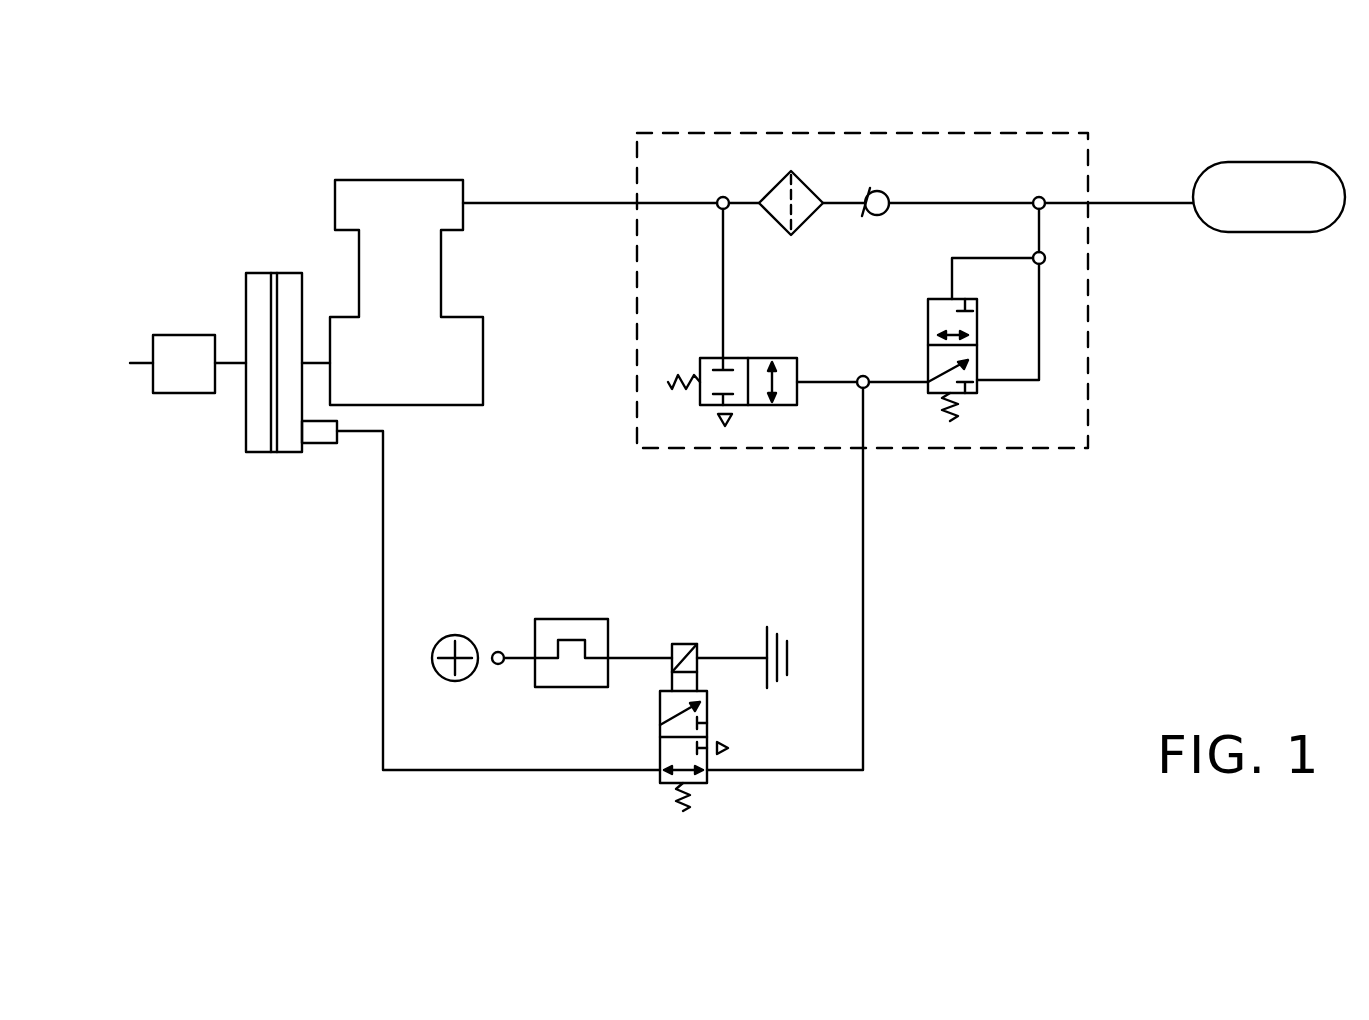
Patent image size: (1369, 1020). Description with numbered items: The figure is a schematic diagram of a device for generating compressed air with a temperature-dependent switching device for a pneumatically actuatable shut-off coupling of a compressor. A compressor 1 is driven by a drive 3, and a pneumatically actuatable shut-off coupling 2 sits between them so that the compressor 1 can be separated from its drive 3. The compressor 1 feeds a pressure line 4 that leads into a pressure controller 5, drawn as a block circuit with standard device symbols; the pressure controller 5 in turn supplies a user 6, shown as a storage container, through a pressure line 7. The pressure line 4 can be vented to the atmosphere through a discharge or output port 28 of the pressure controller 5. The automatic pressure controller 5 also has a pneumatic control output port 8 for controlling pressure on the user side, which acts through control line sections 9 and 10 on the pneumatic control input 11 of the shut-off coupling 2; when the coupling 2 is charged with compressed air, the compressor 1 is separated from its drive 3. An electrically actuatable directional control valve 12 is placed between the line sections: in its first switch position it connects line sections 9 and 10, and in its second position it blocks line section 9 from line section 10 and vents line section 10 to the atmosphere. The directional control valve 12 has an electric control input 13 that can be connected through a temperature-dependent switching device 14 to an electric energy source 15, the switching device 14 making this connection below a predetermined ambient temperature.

The compressor 1 is at (372, 190).
The pneumatically actuatable shut-off coupling 2 is at (262, 440).
The drive 3 is at (170, 387).
The pressure line 4 is at (486, 203).
The pressure controller 5 is at (677, 168).
The user 6 is at (1240, 181).
The pressure line 7 is at (1090, 196).
The pneumatic control output port 8 is at (866, 388).
The control line section 9 is at (864, 609).
The control line section 10 is at (383, 604).
The pneumatic control input 11 is at (322, 438).
The electrically actuatable directional control valve 12 is at (710, 776).
The electric control input 13 is at (692, 650).
The temperature-dependent switching device 14 is at (587, 632).
The electric energy source 15 is at (443, 640).
The discharge or output port 28 is at (720, 428).